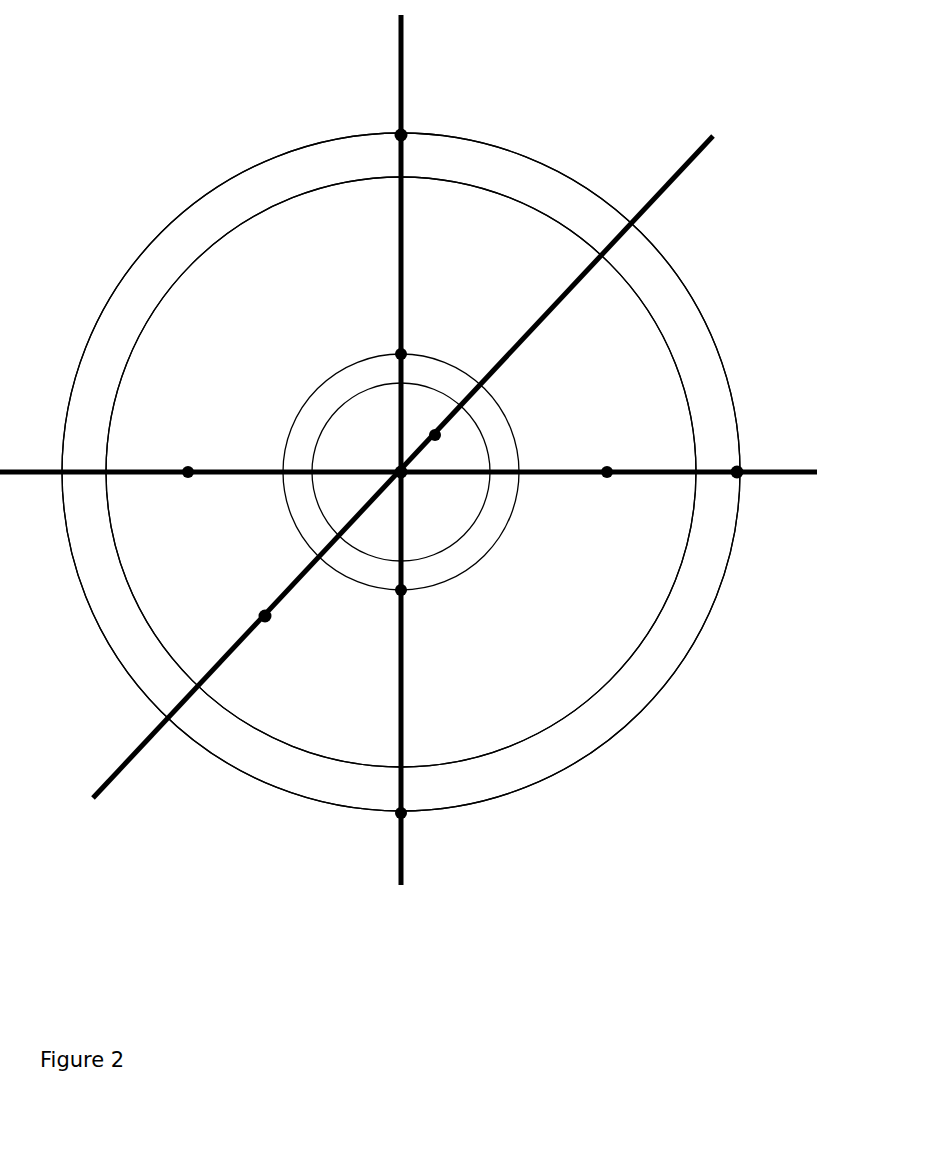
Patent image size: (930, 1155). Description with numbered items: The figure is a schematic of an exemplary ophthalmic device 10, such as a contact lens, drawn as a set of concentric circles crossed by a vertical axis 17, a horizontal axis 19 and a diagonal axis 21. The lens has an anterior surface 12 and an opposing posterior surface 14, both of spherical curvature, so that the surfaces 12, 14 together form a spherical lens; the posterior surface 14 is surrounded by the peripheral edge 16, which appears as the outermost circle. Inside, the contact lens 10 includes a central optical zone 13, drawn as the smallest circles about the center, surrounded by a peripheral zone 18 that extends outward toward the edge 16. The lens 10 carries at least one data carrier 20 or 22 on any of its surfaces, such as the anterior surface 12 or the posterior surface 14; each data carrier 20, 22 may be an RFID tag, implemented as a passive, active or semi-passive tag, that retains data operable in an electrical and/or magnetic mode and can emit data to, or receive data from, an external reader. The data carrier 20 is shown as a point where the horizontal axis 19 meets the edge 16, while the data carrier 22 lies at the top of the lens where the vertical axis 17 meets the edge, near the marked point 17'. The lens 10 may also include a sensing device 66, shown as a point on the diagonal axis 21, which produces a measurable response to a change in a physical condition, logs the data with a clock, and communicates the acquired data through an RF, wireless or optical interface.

The ophthalmic device 10 is at (414, 505).
The anterior surface 12 is at (473, 265).
The optical zone 13 is at (370, 437).
The posterior surface 14 is at (206, 618).
The peripheral edge 16 is at (637, 691).
The vertical axis (V-axis) 17 is at (435, 445).
The point on vertical axis 17' is at (431, 125).
The peripheral zone 18 is at (490, 691).
The horizontal axis (H-axis) 19 is at (783, 474).
The data carrier 20 is at (737, 466).
The diagonal axis 21 is at (698, 157).
The data carrier 22 is at (395, 133).
The sensing device 66 is at (265, 616).